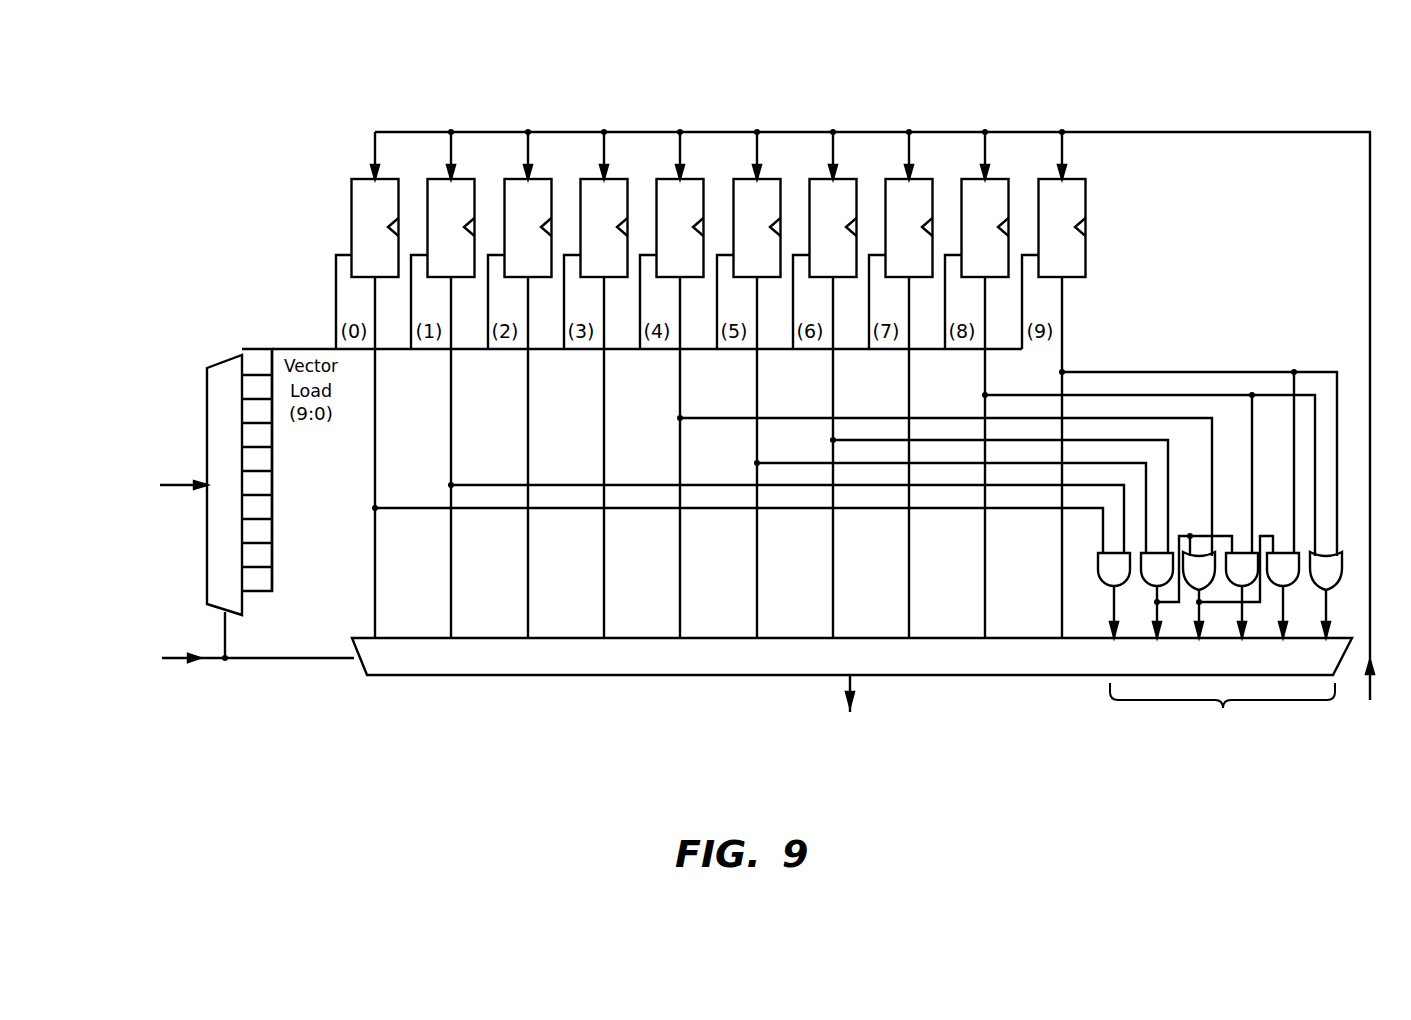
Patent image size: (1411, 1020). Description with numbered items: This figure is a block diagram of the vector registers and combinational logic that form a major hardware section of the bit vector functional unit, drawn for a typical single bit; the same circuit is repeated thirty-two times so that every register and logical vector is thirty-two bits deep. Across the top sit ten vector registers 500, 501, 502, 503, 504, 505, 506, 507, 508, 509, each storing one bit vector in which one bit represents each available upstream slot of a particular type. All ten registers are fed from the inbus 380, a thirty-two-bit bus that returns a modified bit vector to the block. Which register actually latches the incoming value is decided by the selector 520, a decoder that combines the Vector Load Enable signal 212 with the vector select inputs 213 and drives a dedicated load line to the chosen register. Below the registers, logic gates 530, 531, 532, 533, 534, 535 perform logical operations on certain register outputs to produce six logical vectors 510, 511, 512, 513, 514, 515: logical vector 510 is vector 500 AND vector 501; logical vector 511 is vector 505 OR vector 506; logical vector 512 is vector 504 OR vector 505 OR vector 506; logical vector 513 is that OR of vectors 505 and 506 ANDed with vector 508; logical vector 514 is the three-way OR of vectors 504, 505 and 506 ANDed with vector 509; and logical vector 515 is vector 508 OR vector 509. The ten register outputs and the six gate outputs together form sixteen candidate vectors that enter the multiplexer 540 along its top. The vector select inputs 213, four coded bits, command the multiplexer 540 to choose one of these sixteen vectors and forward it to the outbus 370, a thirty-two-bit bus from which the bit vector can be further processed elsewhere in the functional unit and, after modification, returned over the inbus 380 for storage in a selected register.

The vector register 500 is at (385, 179).
The vector register 501 is at (461, 179).
The vector register 502 is at (538, 179).
The vector register 503 is at (614, 179).
The vector register 504 is at (690, 179).
The vector register 505 is at (767, 179).
The vector register 506 is at (843, 179).
The vector register 507 is at (919, 179).
The vector register 508 is at (995, 179).
The vector register 509 is at (1072, 179).
The logical vector 510 is at (1219, 718).
The logical vector 511 is at (1158, 655).
The logical vector 512 is at (1200, 655).
The logical vector 513 is at (1242, 655).
The logical vector 514 is at (1282, 655).
The logical vector 515 is at (1327, 655).
The selector 520 is at (207, 558).
The logic gate 530 is at (1118, 562).
The logic gate 531 is at (1161, 562).
The logic gate 532 is at (1203, 562).
The logic gate 533 is at (1246, 562).
The logic gate 534 is at (1286, 562).
The logic gate 535 is at (1330, 562).
The multiplexer 540 is at (565, 667).
The Vector Load Enable signal 212 is at (151, 493).
The vector select inputs 213 is at (226, 668).
The outbus 370 is at (850, 730).
The inbus 380 is at (883, 450).